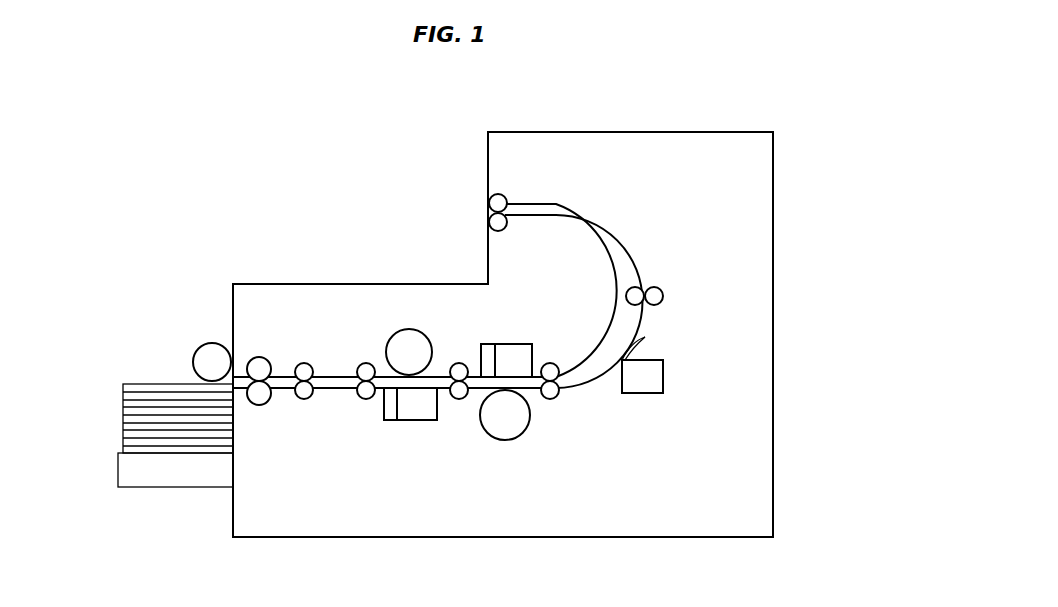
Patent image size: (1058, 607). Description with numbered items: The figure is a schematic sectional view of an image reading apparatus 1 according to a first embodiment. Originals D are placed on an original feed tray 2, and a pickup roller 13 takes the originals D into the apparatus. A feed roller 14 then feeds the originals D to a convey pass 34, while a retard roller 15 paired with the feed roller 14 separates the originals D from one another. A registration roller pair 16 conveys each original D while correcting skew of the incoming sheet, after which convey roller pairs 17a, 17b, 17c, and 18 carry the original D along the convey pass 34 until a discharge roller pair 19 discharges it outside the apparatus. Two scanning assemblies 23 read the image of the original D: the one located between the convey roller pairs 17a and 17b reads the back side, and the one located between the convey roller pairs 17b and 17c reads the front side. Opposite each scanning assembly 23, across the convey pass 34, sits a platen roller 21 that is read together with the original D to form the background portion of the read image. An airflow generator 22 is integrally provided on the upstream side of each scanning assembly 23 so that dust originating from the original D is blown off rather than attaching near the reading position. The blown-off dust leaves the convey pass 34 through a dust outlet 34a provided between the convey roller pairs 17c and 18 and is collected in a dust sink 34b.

The image reading apparatus 1 is at (698, 146).
The original feed tray 2 is at (181, 478).
The original D is at (124, 394).
The pickup roller 13 is at (207, 343).
The feed roller 14 is at (259, 357).
The retard roller 15 is at (259, 405).
The registration roller pair 16 is at (304, 363).
The convey roller pair 17a is at (364, 363).
The convey roller pair 17b is at (460, 399).
The convey roller pair 17c is at (553, 399).
The convey roller pair 18 is at (663, 293).
The discharge roller pair 19 is at (500, 193).
The platen roller 21 is at (407, 329).
The airflow generator 22 is at (487, 344).
The scanning assembly 23 is at (500, 344).
The convey pass 34 is at (652, 318).
The dust outlet 34a is at (645, 338).
The dust sink 34b is at (664, 383).